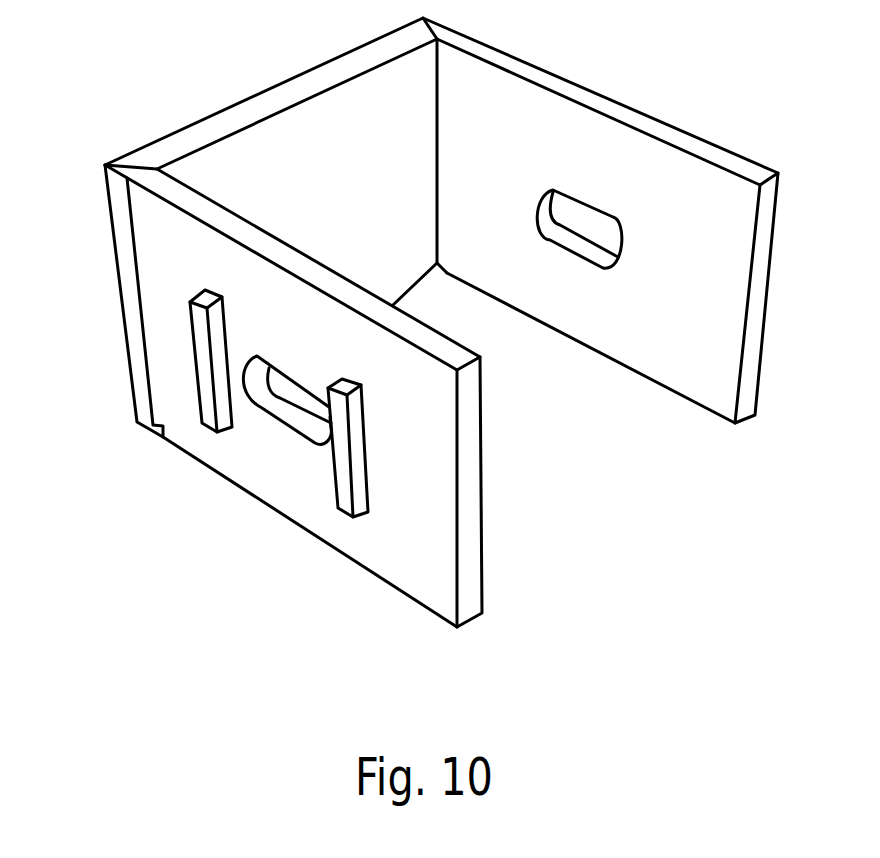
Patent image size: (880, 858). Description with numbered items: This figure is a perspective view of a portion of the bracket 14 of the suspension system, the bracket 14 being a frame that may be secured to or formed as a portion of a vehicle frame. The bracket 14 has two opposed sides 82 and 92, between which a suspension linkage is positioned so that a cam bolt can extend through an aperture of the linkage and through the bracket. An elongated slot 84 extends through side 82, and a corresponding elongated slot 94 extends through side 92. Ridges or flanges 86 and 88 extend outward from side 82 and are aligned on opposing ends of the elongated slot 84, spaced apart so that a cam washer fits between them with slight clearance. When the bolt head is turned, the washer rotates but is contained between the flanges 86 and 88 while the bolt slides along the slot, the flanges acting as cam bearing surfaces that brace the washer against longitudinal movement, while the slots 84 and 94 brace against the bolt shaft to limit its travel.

The bracket 14 is at (267, 100).
The side 82 is at (425, 552).
The elongated slot 84 is at (300, 422).
The flange 86 is at (203, 351).
The flange 88 is at (342, 473).
The side 92 is at (695, 347).
The elongated slot 94 is at (593, 228).